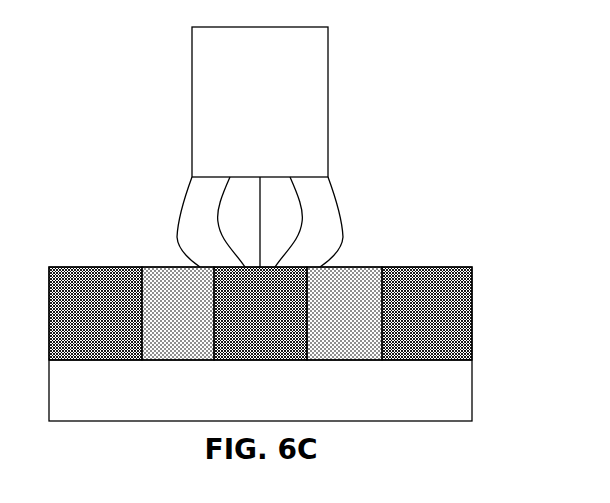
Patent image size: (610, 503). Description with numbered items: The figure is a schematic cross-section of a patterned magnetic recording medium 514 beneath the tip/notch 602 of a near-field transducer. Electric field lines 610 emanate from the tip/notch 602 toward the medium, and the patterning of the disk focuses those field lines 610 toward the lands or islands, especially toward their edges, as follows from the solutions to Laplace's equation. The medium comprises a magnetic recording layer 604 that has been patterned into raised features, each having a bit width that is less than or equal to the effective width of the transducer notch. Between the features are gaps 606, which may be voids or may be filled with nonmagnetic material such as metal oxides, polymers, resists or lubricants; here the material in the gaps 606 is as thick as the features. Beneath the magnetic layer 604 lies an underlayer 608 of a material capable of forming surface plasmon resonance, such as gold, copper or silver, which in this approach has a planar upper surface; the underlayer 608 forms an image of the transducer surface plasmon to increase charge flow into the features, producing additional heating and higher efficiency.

The tip/notch 602 is at (245, 109).
The electric field lines 610 is at (357, 215).
The magnetic recording medium 514 is at (473, 263).
The magnetic recording layer 604 is at (80, 324).
The gaps 606 is at (163, 324).
The underlayer 608 is at (245, 399).